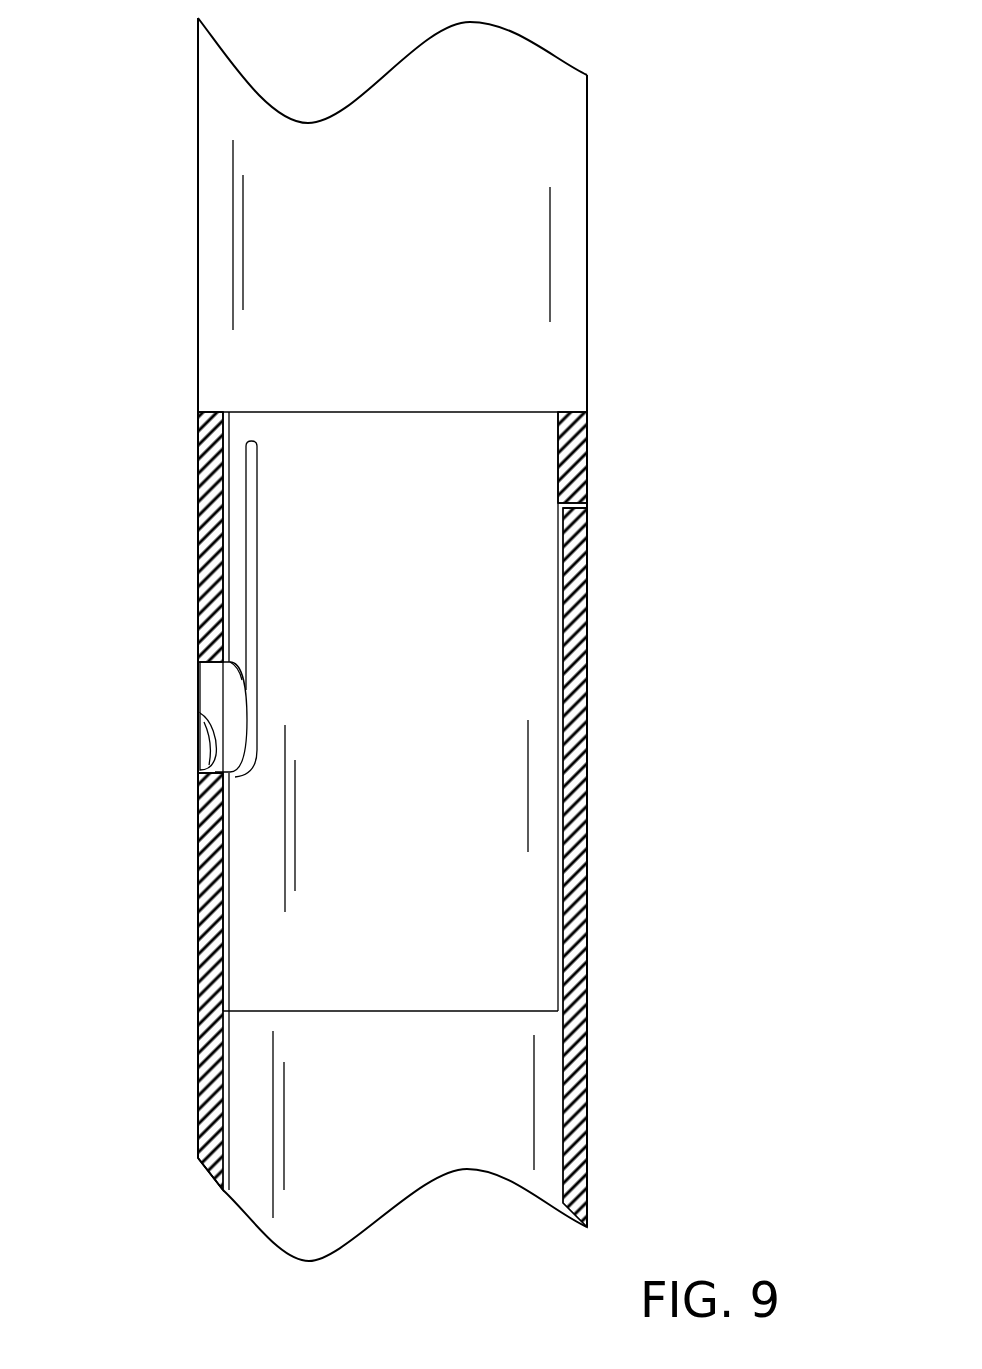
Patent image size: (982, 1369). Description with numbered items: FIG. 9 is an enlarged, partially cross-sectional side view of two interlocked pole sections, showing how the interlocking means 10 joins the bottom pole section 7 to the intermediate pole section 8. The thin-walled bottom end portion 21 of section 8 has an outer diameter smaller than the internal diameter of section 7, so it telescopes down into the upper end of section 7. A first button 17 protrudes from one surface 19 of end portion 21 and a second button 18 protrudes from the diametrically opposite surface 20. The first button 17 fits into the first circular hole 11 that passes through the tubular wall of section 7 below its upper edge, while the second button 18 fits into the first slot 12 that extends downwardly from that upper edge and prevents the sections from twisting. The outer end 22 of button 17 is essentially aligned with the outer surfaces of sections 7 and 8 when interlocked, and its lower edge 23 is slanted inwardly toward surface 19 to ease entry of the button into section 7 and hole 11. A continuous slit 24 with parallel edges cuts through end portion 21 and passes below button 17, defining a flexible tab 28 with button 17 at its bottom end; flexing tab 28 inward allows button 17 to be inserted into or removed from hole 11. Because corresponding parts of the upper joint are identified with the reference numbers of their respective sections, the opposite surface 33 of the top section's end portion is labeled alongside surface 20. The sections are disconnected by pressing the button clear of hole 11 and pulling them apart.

The interlocking means 10 is at (722, 213).
The intermediate pole section 8 is at (587, 353).
The second button 18 is at (587, 447).
The first slot 12 is at (587, 515).
The surface 20 is at (680, 867).
The surface 33 is at (565, 640).
The bottom pole section 7 is at (587, 1077).
The surface 19 is at (203, 968).
The bottom end portion 21 is at (390, 711).
The flexible tab 28 is at (240, 466).
The continuous slit 24 is at (250, 513).
The outer end of button 22 is at (200, 697).
The first button 17 is at (218, 673).
The lower edge of button 23 is at (203, 745).
The first circular hole 11 is at (203, 770).